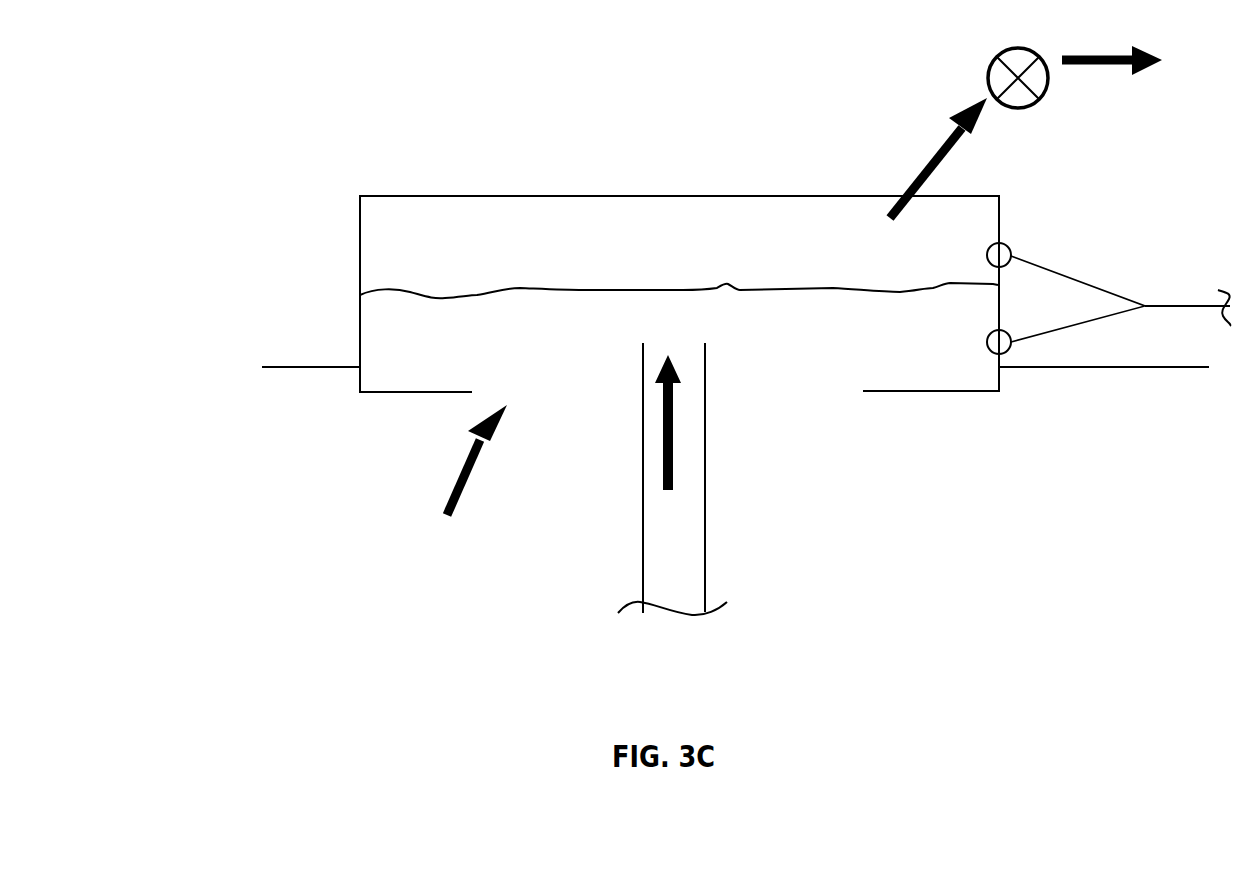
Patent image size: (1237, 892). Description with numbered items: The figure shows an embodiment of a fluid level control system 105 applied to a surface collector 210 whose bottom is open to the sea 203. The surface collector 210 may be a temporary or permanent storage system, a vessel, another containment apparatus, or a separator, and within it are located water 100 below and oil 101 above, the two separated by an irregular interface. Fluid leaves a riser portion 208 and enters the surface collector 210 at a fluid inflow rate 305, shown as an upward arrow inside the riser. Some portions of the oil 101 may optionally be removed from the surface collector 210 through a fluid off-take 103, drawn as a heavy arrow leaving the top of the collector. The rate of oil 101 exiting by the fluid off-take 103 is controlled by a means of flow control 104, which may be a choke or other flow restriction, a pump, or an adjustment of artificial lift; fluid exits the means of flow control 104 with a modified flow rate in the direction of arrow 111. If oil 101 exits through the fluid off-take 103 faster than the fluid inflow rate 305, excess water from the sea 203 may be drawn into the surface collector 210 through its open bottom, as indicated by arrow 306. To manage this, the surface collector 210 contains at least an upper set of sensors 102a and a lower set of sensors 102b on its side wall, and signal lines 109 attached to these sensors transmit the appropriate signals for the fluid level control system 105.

The water 100 is at (453, 355).
The oil 101 is at (453, 254).
The upper set of sensors 102a is at (1007, 245).
The lower set of sensors 102b is at (990, 340).
The fluid off-take 103 is at (932, 158).
The means of flow control 104 is at (1025, 108).
The fluid level control system 105 is at (460, 133).
The signal lines 109 is at (1110, 293).
The arrow 111 is at (1107, 55).
The sea 203 is at (343, 500).
The riser portion 208 is at (705, 527).
The surface collector 210 is at (360, 195).
The fluid inflow rate 305 is at (663, 467).
The arrow 306 is at (457, 487).